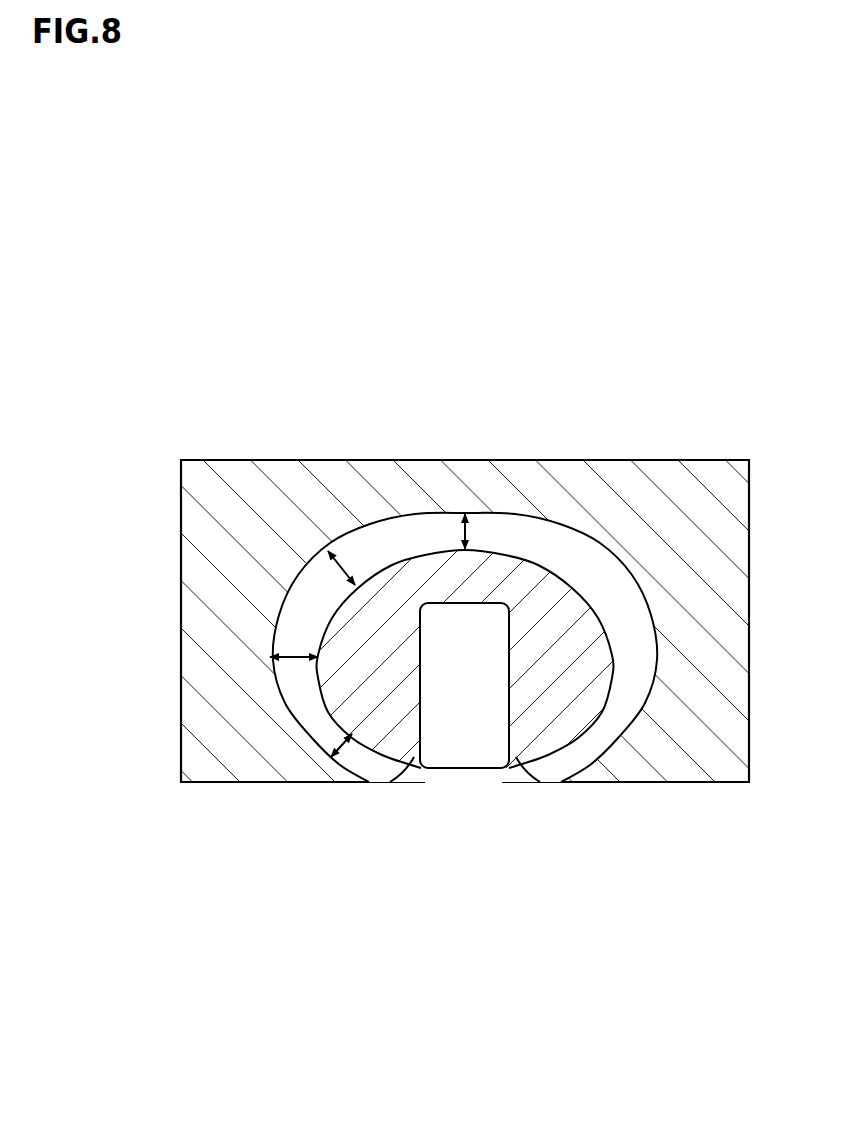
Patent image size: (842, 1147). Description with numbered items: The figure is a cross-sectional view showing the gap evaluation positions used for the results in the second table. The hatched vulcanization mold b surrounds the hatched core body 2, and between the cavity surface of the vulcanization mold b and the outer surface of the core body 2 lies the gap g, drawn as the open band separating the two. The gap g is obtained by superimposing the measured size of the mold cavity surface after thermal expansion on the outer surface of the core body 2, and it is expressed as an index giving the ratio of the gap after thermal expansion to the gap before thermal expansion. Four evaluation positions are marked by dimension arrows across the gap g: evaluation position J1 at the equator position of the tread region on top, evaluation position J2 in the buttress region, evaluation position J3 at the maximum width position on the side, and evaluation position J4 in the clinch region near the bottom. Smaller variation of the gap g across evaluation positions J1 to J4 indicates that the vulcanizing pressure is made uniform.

The vulcanization mold b is at (703, 560).
The core body 2 is at (552, 695).
The gap g is at (466, 549).
The evaluation position J1 is at (464, 511).
The evaluation position J2 is at (325, 548).
The evaluation position J3 is at (266, 657).
The evaluation position J4 is at (326, 762).